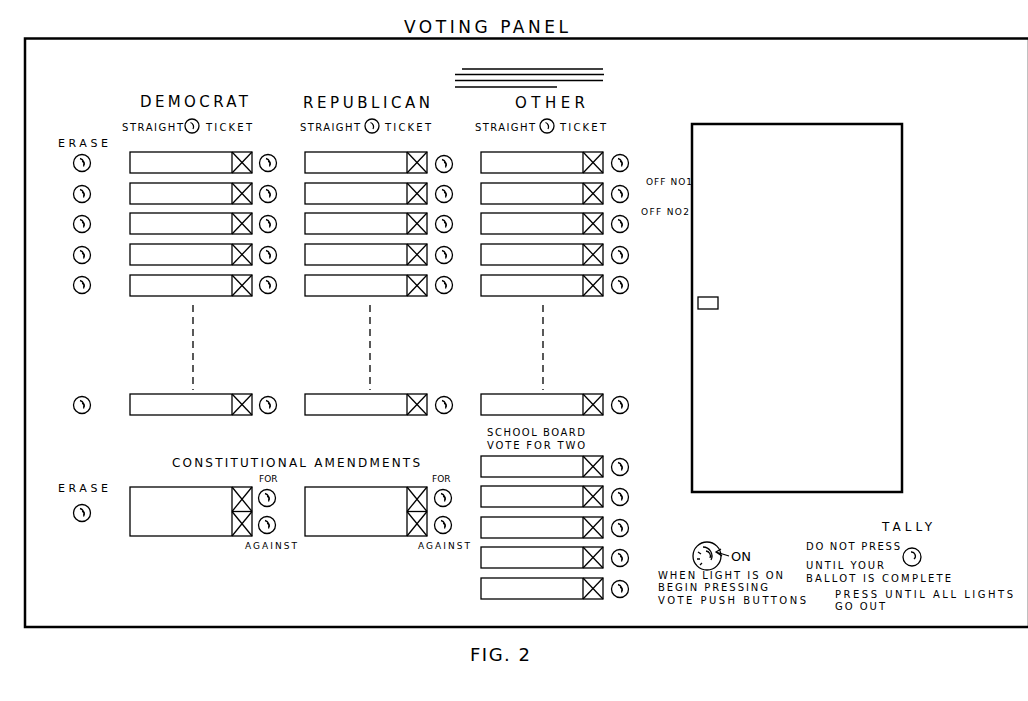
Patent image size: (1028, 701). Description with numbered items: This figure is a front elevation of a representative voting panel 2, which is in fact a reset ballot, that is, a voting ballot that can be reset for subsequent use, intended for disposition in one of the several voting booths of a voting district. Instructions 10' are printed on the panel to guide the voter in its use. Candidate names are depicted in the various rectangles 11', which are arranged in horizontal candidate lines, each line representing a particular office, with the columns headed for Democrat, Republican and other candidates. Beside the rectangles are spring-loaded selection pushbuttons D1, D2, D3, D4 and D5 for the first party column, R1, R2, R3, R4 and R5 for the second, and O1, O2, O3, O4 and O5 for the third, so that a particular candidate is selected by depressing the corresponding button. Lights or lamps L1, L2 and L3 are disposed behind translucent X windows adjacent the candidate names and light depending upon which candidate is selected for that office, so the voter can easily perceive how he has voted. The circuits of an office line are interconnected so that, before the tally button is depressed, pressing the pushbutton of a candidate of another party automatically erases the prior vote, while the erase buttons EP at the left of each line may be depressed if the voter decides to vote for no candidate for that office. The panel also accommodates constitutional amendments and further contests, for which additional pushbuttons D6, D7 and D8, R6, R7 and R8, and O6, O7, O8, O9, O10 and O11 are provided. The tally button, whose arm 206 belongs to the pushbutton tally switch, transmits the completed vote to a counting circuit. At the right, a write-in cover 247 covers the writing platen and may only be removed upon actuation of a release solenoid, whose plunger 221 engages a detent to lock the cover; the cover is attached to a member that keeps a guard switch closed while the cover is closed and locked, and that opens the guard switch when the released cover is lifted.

The voting panel 2 is at (18, 176).
The instructions 10' is at (534, 69).
The rectangles 11' is at (191, 156).
The write-in cover 247 is at (845, 133).
The solenoid plunger 221 is at (698, 301).
The arm of pushbutton tally switch 206 is at (909, 549).
The erase buttons EP is at (73, 163).
The lamp L1 is at (236, 157).
The lamp L2 is at (421, 157).
The lamp L3 is at (592, 157).
The selection pushbutton D1 is at (270, 154).
The selection pushbutton D2 is at (276, 192).
The selection pushbutton D3 is at (276, 222).
The selection pushbutton D4 is at (275, 252).
The selection pushbutton D5 is at (275, 283).
The democrat vote push button D6 is at (274, 401).
The democrat vote push button (for) D7 is at (271, 503).
The democrat vote push button (against) D8 is at (273, 525).
The selection pushbutton R1 is at (452, 169).
The selection pushbutton R2 is at (451, 199).
The selection pushbutton R3 is at (452, 225).
The selection pushbutton R4 is at (452, 256).
The selection pushbutton R5 is at (452, 286).
The republican vote push button R6 is at (452, 409).
The republican vote push button (for) R7 is at (451, 504).
The republican vote push button (against) R8 is at (451, 524).
The selection pushbutton O1 is at (628, 162).
The selection pushbutton O2 is at (628, 193).
The selection pushbutton O3 is at (628, 223).
The selection pushbutton O4 is at (628, 254).
The selection pushbutton O5 is at (628, 284).
The other vote push button O6 is at (628, 404).
The other vote push button O7 is at (628, 466).
The other vote push button O8 is at (628, 496).
The other vote push button O9 is at (628, 527).
The other vote push button O10 is at (628, 557).
The other vote push button O11 is at (628, 588).